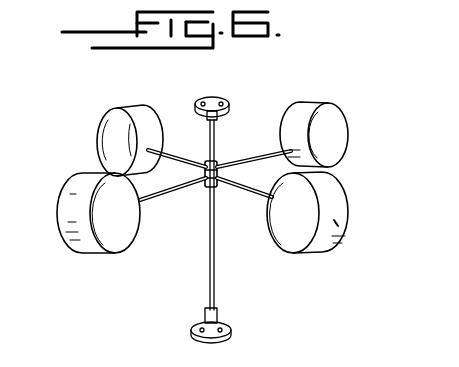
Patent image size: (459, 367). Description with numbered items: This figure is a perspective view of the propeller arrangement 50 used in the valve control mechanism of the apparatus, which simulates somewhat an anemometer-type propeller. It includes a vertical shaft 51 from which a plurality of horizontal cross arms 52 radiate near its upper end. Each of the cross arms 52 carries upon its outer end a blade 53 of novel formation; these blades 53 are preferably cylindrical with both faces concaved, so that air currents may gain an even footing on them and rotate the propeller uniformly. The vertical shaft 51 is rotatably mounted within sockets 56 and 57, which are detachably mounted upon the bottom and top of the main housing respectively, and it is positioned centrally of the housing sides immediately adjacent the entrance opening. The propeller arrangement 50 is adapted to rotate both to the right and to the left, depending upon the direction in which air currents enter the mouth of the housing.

The propeller arrangement 50 is at (209, 281).
The vertical shaft 51 is at (215, 247).
The horizontal cross arms 52 is at (241, 161).
The blade 53 is at (328, 197).
The socket 56 is at (218, 336).
The socket 57 is at (214, 103).